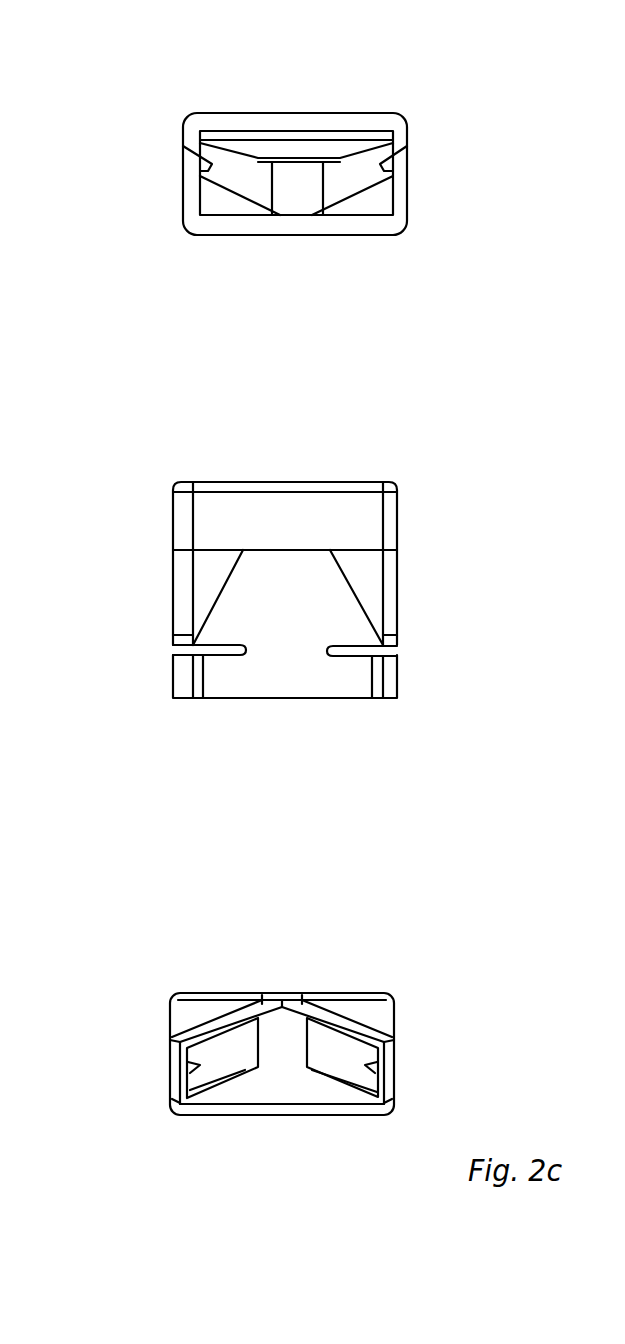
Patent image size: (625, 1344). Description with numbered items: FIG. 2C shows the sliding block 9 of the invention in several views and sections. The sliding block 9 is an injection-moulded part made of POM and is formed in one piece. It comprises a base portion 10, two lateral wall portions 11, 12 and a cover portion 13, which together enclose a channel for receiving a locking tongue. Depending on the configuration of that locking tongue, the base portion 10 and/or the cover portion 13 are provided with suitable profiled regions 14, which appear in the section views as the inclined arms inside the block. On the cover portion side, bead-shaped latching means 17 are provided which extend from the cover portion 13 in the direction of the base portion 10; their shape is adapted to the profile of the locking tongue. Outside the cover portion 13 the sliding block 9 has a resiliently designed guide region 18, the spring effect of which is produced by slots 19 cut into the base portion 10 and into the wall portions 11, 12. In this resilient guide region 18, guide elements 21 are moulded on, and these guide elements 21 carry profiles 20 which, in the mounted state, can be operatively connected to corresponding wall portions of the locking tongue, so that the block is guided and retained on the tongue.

The sliding block 9 is at (324, 561).
The base portion 10 is at (298, 620).
The lateral wall portion 11 is at (180, 562).
The lateral wall portion 12 is at (387, 577).
The cover portion 13 is at (237, 128).
The profiled regions 14 is at (260, 161).
The latching means 17 is at (303, 157).
The guide region 18 is at (223, 682).
The slots 19 is at (187, 653).
The profiles 20 is at (402, 153).
The guide elements 21 is at (402, 208).